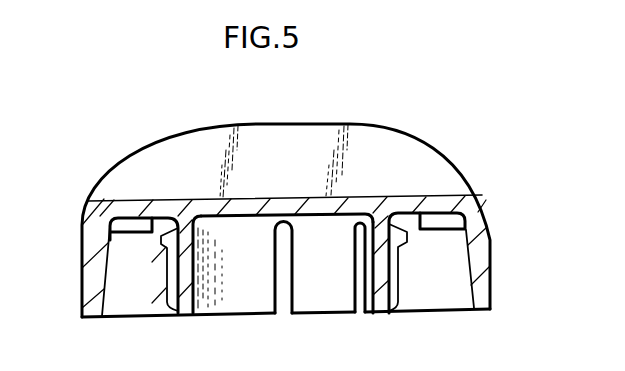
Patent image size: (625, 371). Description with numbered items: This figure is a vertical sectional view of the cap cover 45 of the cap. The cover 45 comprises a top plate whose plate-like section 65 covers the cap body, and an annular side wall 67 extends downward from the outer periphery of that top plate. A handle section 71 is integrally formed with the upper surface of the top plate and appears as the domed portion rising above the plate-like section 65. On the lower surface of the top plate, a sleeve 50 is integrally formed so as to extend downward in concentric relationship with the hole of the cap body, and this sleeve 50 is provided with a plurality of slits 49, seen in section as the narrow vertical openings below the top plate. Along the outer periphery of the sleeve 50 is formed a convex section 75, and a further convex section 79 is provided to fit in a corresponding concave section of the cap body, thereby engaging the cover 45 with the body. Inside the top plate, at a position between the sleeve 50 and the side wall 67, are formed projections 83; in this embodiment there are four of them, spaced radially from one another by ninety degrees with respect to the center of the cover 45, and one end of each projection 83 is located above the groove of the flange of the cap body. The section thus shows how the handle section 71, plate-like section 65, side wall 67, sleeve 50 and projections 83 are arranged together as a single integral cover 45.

The cover 45 is at (95, 188).
The handle section 71 is at (321, 129).
The plate-like section 65 is at (282, 205).
The projections 83 is at (135, 229).
The convex section 79 is at (166, 242).
The convex section 75 is at (168, 302).
The sleeve 50 is at (184, 305).
The slits 49 is at (285, 302).
The annular side wall 67 is at (478, 222).